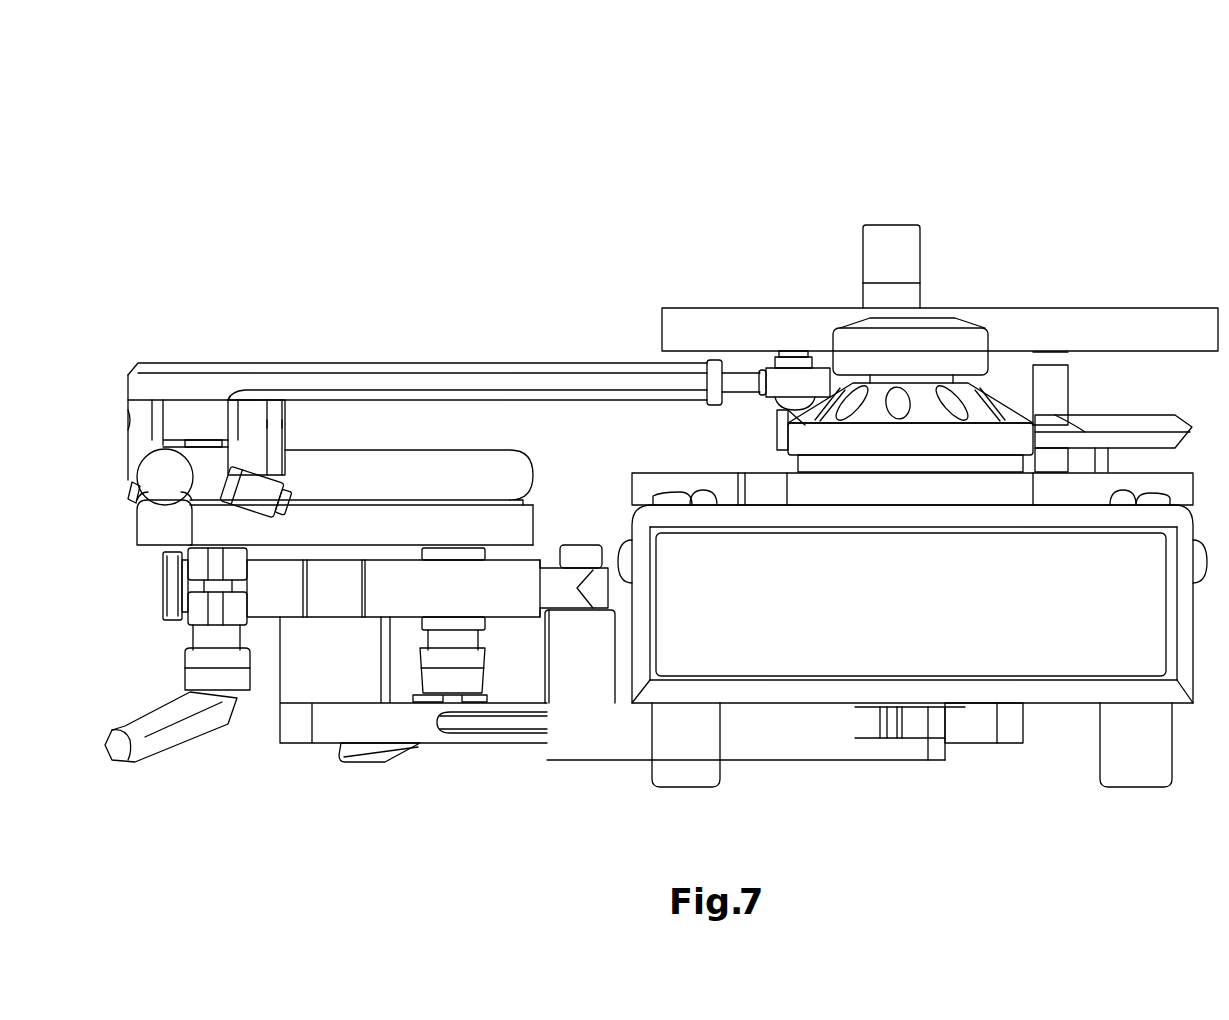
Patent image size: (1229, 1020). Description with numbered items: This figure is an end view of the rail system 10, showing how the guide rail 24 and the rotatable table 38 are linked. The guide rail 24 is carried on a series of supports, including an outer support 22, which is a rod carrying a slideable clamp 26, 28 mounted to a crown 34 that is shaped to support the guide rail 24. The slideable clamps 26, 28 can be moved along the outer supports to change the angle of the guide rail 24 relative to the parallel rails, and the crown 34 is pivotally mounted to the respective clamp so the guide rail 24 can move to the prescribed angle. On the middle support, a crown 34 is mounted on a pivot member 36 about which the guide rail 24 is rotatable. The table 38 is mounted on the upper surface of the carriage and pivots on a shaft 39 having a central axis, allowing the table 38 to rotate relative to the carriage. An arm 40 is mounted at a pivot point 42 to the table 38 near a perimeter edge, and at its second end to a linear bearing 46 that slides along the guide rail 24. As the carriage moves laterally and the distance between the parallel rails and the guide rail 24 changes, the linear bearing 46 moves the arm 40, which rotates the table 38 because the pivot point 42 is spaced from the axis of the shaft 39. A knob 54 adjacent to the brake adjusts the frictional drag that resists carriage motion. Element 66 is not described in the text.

The rail system 10 is at (979, 136).
The support 22 is at (266, 593).
The guide rail 24 is at (407, 488).
The slideable clamp 26 is at (474, 551).
The slideable clamp 28 is at (198, 620).
The crown 34 is at (150, 513).
The pivot member 36 is at (343, 678).
The table 38 is at (1142, 307).
The shaft 39 is at (1067, 393).
The arm 40 is at (430, 363).
The pivot point 42 is at (800, 378).
The linear bearing 46 is at (200, 420).
The knob 54 is at (962, 332).
The vented base 66 is at (800, 445).